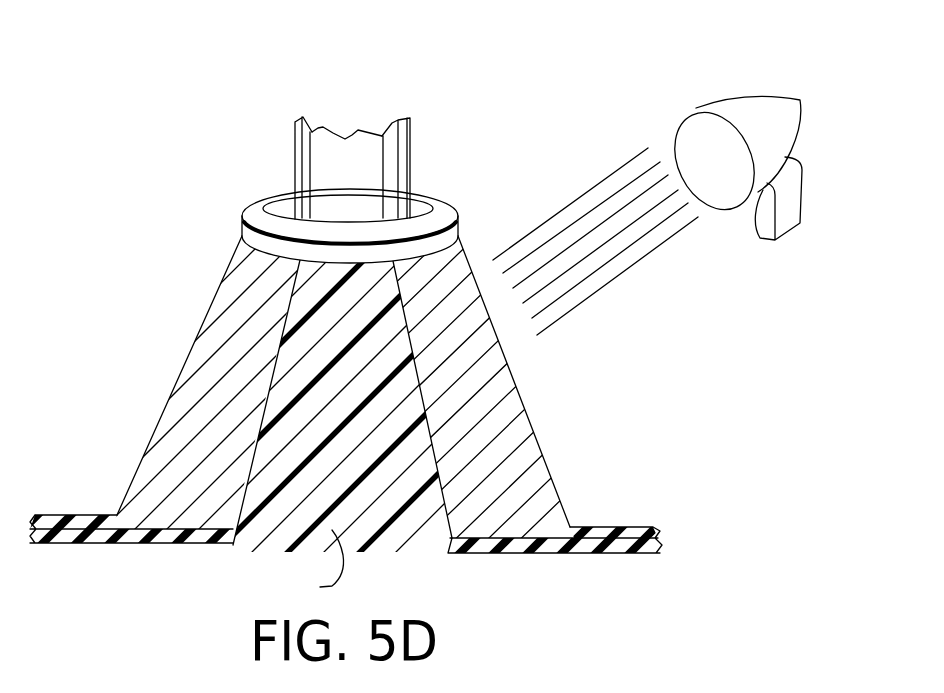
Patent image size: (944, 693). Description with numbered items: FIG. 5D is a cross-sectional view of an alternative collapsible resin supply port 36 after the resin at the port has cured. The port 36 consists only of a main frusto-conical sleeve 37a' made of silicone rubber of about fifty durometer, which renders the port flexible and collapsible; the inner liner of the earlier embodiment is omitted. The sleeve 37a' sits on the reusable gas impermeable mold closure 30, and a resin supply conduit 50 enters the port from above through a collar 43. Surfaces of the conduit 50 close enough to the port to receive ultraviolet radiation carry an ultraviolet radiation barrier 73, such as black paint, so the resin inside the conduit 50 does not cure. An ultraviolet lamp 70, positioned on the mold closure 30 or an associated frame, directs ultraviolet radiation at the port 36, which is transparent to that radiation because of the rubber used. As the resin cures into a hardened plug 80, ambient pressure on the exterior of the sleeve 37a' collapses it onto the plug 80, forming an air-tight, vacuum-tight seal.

The mold closure 30 is at (593, 543).
The resin supply port 36 is at (155, 418).
The main frusto-conical sleeve 37a' is at (458, 395).
The collar 43 is at (437, 217).
The resin supply conduit 50 is at (353, 126).
The ultraviolet lamp 70 is at (733, 95).
The ultraviolet radiation barrier 73 is at (413, 148).
The cured resin plug 80 is at (277, 377).